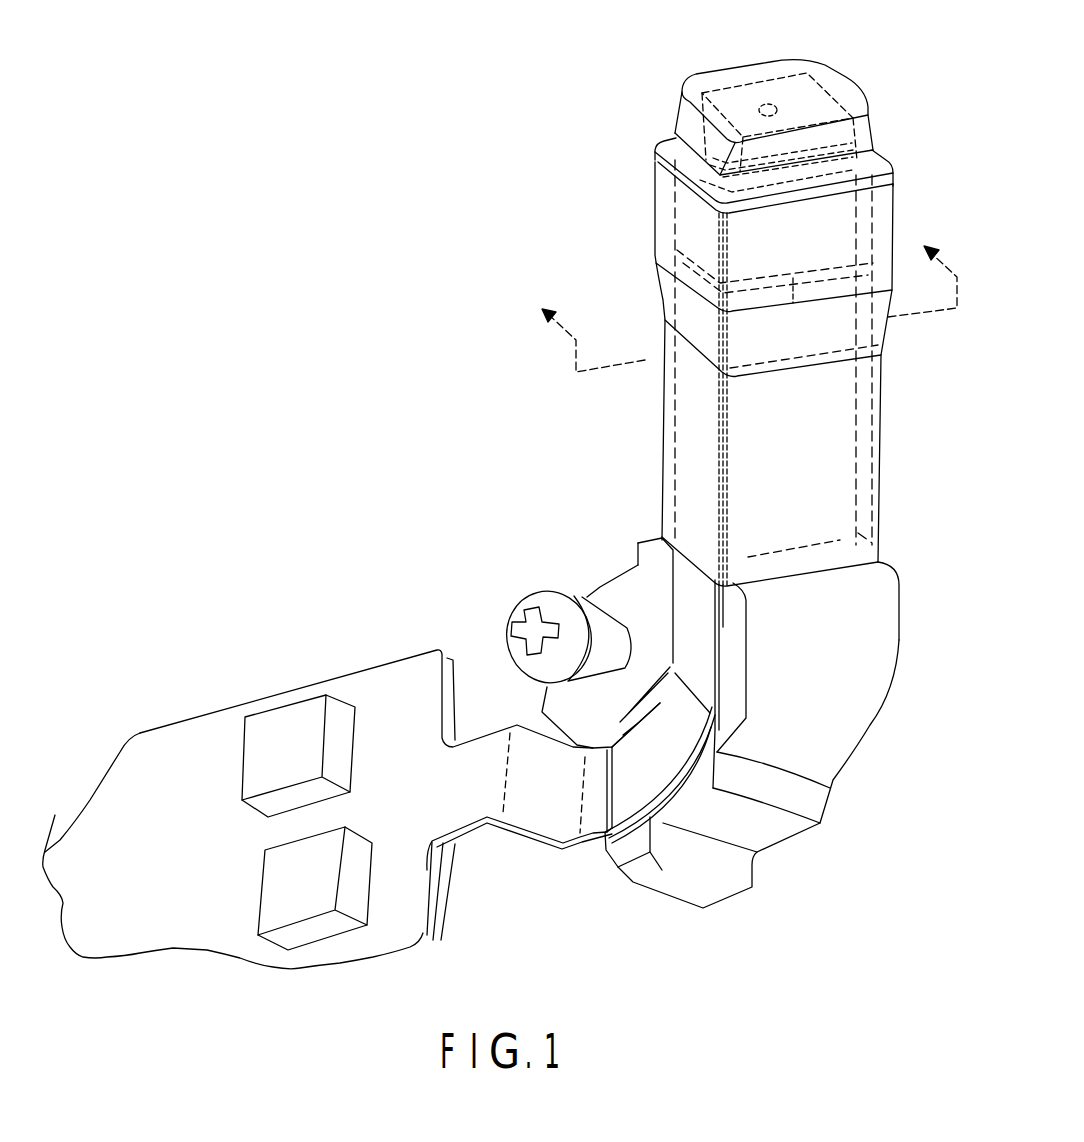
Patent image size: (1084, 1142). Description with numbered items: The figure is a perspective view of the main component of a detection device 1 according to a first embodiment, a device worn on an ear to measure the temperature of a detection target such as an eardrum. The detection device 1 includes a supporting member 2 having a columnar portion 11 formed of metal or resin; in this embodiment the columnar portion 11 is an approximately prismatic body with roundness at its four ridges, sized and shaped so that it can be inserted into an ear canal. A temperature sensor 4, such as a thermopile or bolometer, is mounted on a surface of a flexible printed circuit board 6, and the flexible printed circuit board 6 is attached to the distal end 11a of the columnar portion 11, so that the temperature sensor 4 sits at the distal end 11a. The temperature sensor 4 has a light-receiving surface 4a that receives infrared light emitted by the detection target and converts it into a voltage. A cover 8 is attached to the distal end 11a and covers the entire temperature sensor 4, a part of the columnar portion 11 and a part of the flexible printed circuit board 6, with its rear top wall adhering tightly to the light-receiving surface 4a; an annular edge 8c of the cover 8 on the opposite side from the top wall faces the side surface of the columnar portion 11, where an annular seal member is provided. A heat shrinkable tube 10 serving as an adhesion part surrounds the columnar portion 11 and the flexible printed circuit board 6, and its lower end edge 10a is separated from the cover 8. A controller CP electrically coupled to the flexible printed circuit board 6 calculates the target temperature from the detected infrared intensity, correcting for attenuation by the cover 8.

The detection device 1 is at (489, 110).
The supporting member 2 is at (863, 738).
The temperature sensor 4 is at (740, 94).
The light-receiving surface 4a is at (769, 102).
The flexible printed circuit board 6 is at (392, 660).
The cover 8 is at (842, 80).
The annular edge 8c is at (793, 282).
The heat shrinkable tube 10 is at (880, 492).
The lower end edge 10a is at (805, 575).
The columnar portion 11 is at (833, 423).
The distal end 11a is at (880, 158).
The controller CP is at (300, 910).